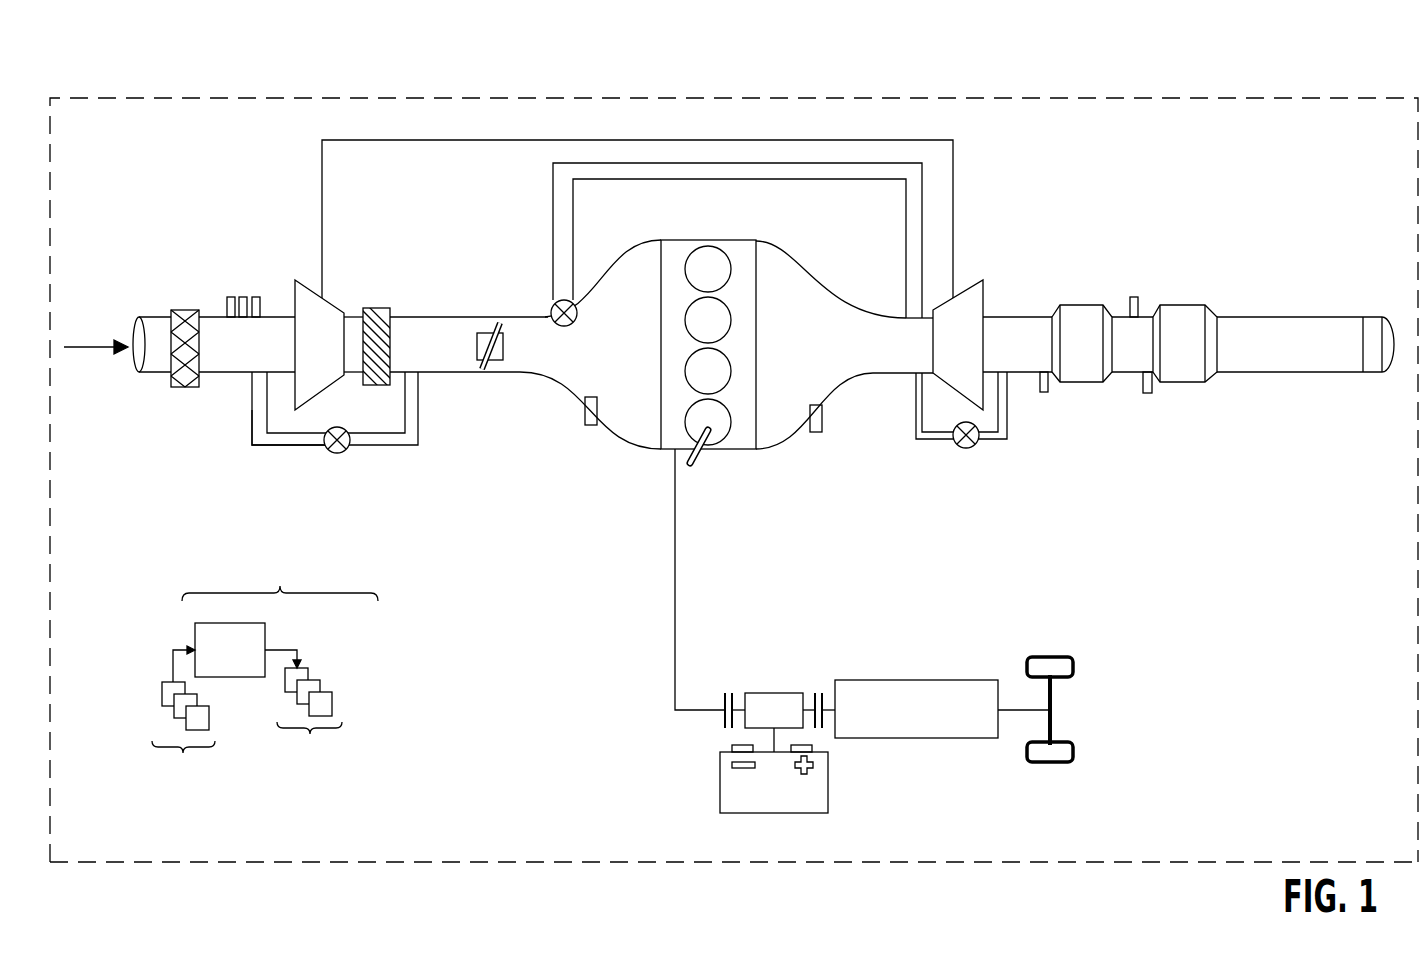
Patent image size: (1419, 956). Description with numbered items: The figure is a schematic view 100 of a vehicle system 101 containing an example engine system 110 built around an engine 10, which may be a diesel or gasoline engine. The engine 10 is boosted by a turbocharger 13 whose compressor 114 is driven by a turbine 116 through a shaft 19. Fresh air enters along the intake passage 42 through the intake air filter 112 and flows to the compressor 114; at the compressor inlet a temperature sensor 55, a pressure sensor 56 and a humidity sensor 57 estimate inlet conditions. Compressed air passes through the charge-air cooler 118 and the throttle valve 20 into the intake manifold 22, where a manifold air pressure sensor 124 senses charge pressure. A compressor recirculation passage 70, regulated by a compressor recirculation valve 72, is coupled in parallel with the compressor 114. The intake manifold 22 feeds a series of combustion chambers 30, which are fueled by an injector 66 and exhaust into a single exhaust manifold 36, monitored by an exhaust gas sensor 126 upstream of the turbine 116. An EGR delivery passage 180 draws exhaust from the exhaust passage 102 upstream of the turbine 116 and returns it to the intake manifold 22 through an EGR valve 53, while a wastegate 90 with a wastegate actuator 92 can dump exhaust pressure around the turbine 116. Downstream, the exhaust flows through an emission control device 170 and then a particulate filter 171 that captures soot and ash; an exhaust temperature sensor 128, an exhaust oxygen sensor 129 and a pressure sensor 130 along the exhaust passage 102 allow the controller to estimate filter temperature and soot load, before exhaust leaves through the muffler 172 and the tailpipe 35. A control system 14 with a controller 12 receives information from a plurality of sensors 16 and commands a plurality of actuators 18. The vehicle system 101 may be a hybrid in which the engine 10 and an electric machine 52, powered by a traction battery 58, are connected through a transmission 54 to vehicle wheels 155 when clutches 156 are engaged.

The schematic view 100 is at (1313, 58).
The vehicle system 101 is at (879, 866).
The engine system 110 is at (1225, 190).
The engine 10 is at (725, 364).
The controller 12 is at (230, 650).
The turbocharger 13 is at (329, 430).
The control system 14 is at (265, 655).
The sensors 16 is at (187, 719).
The actuators 18 is at (310, 719).
The shaft 19 is at (940, 140).
The throttle valve 20 is at (503, 353).
The intake manifold 22 is at (590, 344).
The combustion chambers 30 is at (728, 260).
The tailpipe 35 is at (1383, 374).
The exhaust manifold 36 is at (831, 345).
The intake passage 42 is at (156, 376).
The electric machine 52 is at (767, 692).
The EGR valve 53 is at (577, 316).
The transmission 54 is at (972, 738).
The temperature sensor 55 is at (230, 296).
The pressure sensor 56 is at (243, 296).
The humidity sensor 57 is at (256, 296).
The traction battery 58 is at (828, 785).
The injector 66 is at (714, 453).
The compressor recirculation passage 70 is at (280, 447).
The compressor recirculation valve 72 is at (329, 451).
The wastegate 90 is at (918, 441).
The wastegate actuator 92 is at (956, 446).
The exhaust passage 102 is at (1217, 374).
The intake air filter 112 is at (187, 309).
The compressor 114 is at (319, 345).
The turbine 116 is at (958, 345).
The charge-air cooler 118 is at (366, 305).
The manifold air pressure sensor 124 is at (585, 413).
The exhaust gas sensor 126 is at (822, 410).
The exhaust temperature sensor 128 is at (1134, 297).
The exhaust oxygen sensor 129 is at (1048, 392).
The pressure sensor 130 is at (1148, 393).
The vehicle wheels 155 is at (1053, 761).
The clutches 156 is at (723, 696).
The emission control device 170 is at (1089, 305).
The particulate filter 171 is at (1173, 305).
The muffler 172 is at (1372, 316).
The EGR delivery passage 180 is at (773, 180).